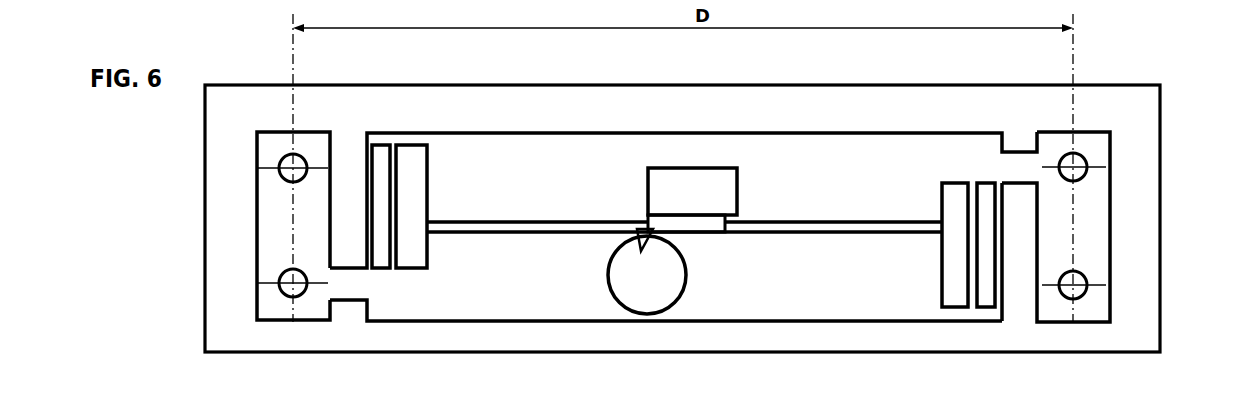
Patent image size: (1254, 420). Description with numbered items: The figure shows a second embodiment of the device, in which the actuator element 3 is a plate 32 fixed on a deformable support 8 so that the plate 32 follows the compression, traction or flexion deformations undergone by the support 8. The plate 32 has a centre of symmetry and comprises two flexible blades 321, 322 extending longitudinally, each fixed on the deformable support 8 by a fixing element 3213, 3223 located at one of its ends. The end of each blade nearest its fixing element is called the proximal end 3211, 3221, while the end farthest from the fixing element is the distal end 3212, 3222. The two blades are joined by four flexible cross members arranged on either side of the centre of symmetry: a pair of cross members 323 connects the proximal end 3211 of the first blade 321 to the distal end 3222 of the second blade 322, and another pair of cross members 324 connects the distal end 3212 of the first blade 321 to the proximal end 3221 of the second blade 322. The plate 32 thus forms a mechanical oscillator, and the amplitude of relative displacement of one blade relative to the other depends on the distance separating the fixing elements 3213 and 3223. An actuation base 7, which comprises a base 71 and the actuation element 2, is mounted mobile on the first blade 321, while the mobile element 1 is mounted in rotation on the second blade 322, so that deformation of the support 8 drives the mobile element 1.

The mobile element 1 is at (662, 292).
The actuation element 2 is at (697, 230).
The actuator element 3 is at (162, 170).
The actuation base 7 is at (634, 189).
The base 71 is at (691, 185).
The deformable support 8 is at (1148, 135).
The plate 32 is at (567, 329).
The first blade 321 is at (786, 152).
The proximal end of the first blade 3211 is at (954, 159).
The distal end of the first blade 3212 is at (421, 140).
The second blade 322 is at (792, 302).
The proximal end of the second blade 3221 is at (413, 297).
The distal end of the second blade 3222 is at (948, 313).
The fixing element 3223 is at (268, 228).
The fixing element 3213 is at (1097, 232).
The cross members 323 is at (973, 272).
The cross members 324 is at (392, 180).